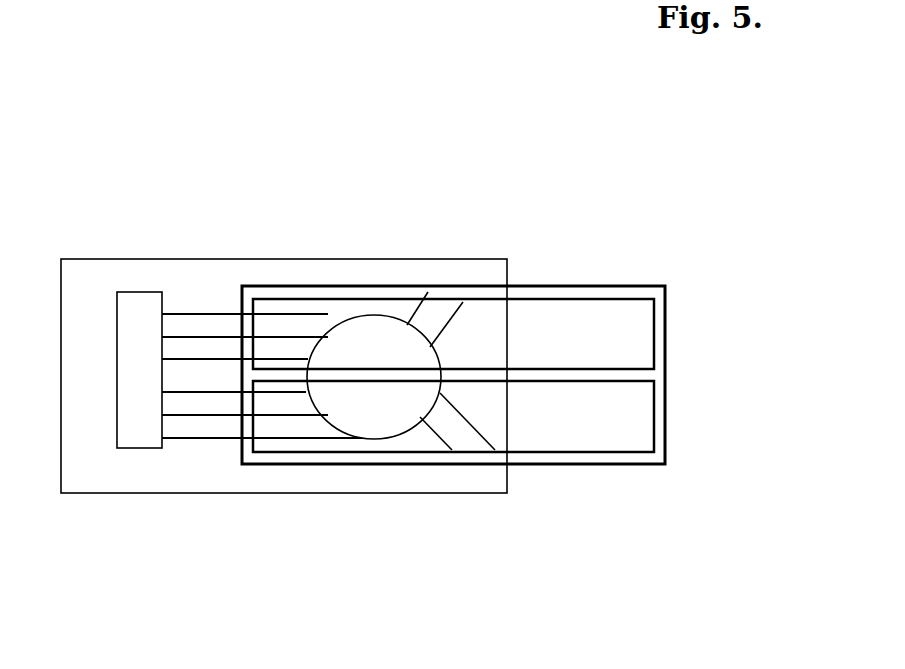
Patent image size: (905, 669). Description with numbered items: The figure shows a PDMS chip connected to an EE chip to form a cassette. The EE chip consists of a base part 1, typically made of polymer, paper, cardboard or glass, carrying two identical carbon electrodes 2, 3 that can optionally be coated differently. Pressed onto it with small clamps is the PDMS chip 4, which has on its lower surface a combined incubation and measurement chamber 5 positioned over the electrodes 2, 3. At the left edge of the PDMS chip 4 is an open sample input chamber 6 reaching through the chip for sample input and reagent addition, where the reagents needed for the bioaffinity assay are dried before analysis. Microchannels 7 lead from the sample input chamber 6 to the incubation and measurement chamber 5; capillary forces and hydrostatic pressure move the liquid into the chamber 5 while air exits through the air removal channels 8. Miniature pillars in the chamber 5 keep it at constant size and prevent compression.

The base part 1 is at (656, 466).
The carbon electrode 2 is at (572, 332).
The carbon electrode 3 is at (608, 428).
The PDMS chip 4 is at (183, 280).
The incubation and measurement chamber 5 is at (386, 417).
The sample input chamber 6 is at (127, 394).
The microchannels 7 is at (195, 439).
The air removal channels 8 is at (462, 328).